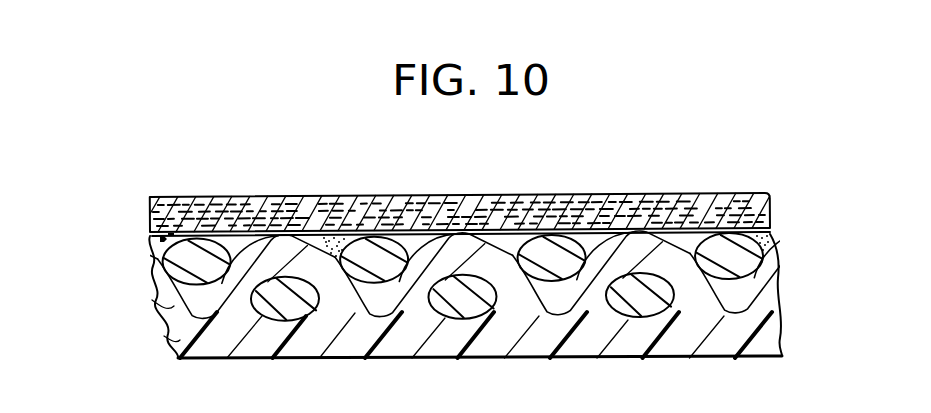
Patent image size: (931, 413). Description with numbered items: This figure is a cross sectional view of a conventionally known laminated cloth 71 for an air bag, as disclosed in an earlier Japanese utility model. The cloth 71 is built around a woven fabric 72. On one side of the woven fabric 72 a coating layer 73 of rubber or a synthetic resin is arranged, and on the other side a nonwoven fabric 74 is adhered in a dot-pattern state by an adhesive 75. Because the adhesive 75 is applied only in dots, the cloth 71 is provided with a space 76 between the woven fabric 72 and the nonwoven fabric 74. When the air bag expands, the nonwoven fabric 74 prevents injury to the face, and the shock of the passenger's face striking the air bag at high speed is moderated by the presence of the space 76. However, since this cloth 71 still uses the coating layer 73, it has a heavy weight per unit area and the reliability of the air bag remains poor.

The cloth 71 is at (434, 231).
The woven fabric 72 is at (162, 283).
The coating layer 73 is at (172, 337).
The nonwoven fabric 74 is at (152, 209).
The adhesive 75 is at (165, 238).
The space 76 is at (239, 240).